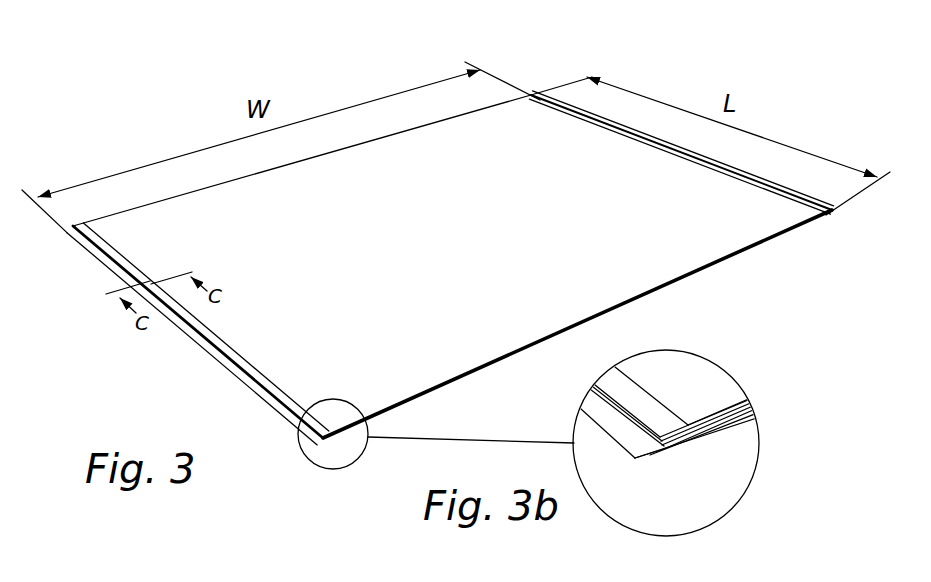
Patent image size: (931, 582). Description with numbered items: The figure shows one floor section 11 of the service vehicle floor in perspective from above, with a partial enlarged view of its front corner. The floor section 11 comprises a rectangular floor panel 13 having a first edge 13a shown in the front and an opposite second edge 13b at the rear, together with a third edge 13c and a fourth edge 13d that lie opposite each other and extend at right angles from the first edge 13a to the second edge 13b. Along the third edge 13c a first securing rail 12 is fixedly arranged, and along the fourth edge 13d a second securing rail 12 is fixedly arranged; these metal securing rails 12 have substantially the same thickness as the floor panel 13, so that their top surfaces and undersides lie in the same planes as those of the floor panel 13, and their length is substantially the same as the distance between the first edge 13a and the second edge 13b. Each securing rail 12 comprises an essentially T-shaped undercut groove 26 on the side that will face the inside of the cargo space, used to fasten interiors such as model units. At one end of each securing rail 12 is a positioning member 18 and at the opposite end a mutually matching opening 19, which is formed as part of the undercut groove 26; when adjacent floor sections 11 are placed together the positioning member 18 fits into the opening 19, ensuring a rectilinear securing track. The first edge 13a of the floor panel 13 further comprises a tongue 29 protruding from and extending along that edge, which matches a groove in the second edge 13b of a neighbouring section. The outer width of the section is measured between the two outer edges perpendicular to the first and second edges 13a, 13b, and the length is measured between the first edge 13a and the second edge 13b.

In FIG. 3, the floor section 11 is at (428, 228).
In FIG. 3, the securing rail 12 is at (277, 397).
In FIG. 3, the floor panel 13 is at (453, 264).
In FIG. 3B, the floor panel 13 is at (720, 395).
In FIG. 3, the first edge 13a is at (482, 369).
In FIG. 3B, the first edge 13a is at (731, 402).
In FIG. 3, the second edge 13b is at (273, 168).
In FIG. 3, the third edge 13c is at (228, 362).
In FIG. 3, the fourth edge 13d is at (667, 140).
In FIG. 3B, the positioning member 18 is at (655, 450).
In FIG. 3, the opening 19 is at (73, 226).
In FIG. 3, the undercut groove 26 is at (190, 330).
In FIG. 3B, the undercut groove 26 is at (612, 401).
In FIG. 3B, the tongue 29 is at (740, 424).